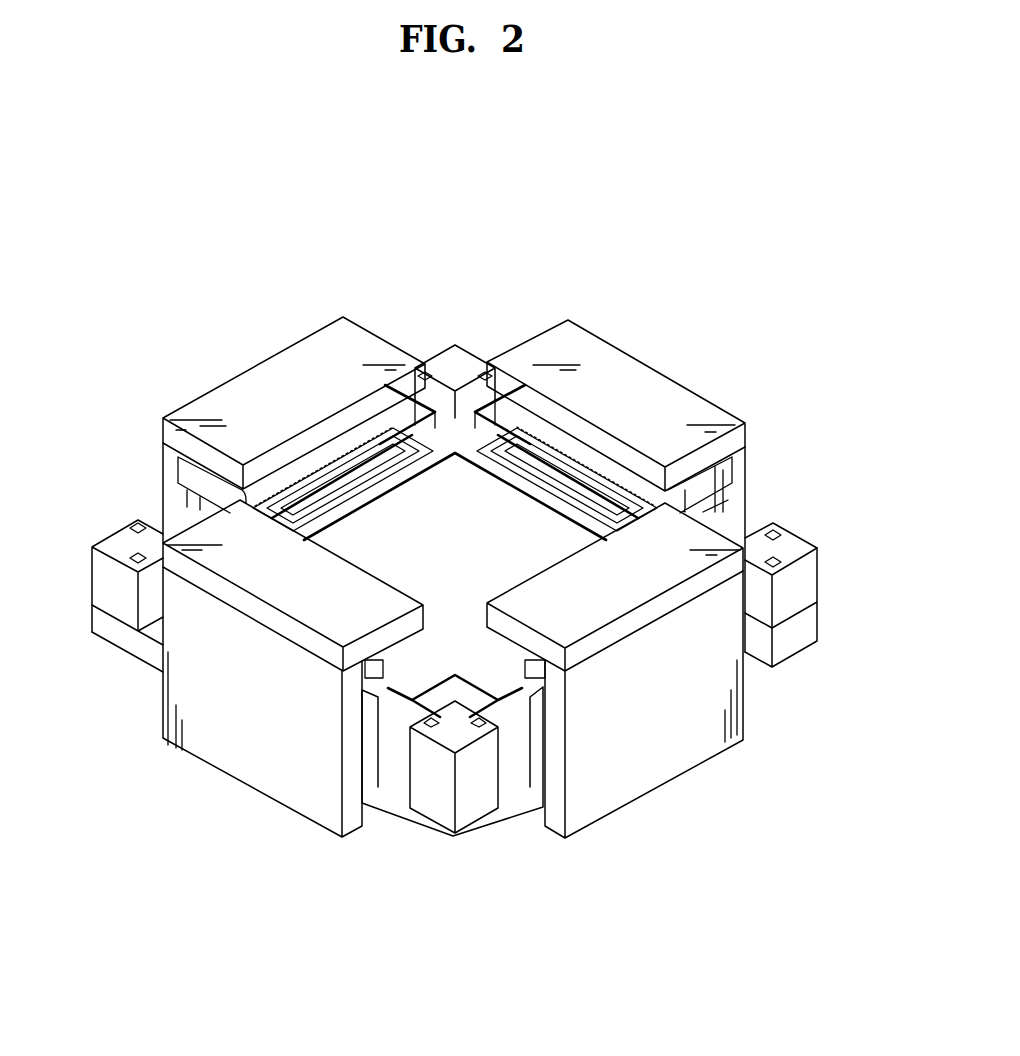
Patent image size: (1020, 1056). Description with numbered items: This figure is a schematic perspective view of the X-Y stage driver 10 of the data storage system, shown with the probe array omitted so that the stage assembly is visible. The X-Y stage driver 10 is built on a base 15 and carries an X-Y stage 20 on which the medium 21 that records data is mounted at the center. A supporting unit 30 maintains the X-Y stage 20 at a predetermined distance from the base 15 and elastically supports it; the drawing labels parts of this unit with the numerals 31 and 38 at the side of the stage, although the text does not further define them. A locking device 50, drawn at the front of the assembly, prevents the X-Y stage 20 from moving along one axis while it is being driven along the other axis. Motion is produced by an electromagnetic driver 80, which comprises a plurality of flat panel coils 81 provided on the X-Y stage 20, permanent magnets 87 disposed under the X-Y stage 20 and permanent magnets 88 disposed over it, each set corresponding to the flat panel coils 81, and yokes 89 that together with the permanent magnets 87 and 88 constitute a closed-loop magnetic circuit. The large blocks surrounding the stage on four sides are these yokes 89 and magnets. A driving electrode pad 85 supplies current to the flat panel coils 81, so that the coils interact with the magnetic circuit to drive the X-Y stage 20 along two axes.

The X-Y stage driver 10 is at (653, 343).
The base 15 is at (787, 640).
The X-Y stage 20 is at (452, 440).
The medium 21 is at (464, 542).
The supporting unit 30 is at (843, 454).
The electrode pads 31 is at (758, 540).
The sensor block 38 is at (795, 548).
The locking device 50 is at (368, 683).
The electromagnetic driver 80 is at (680, 870).
The flat panel coils 81 is at (537, 455).
The driving electrode pad 85 is at (136, 558).
The permanent magnets 87 is at (525, 808).
The permanent magnets 88 is at (730, 530).
The yokes 89 is at (637, 773).